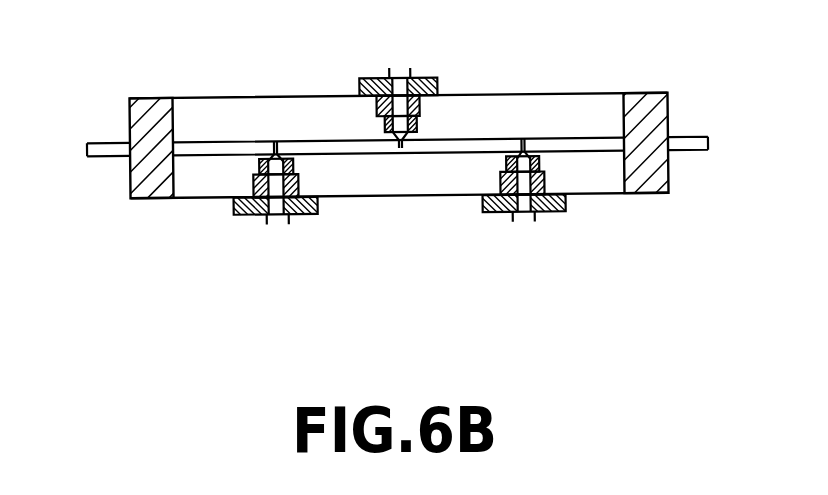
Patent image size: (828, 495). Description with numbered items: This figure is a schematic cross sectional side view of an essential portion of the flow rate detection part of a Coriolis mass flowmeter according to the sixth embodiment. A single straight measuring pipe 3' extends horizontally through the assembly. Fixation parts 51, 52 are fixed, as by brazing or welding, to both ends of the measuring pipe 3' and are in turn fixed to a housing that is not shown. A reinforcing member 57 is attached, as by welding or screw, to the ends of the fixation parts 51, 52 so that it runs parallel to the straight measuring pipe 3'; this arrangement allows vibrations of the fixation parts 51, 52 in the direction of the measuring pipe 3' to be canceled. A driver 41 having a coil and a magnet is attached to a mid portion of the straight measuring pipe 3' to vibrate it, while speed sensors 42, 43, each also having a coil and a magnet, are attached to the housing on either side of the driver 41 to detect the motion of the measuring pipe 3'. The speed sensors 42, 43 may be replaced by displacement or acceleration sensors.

The single straight measuring pipe 3' is at (397, 93).
The driver 41 is at (420, 107).
The speed sensor 42 is at (253, 188).
The speed sensor 43 is at (500, 183).
The fixation part 51 is at (155, 98).
The fixation part 52 is at (650, 100).
The reinforcing member 57 is at (300, 107).